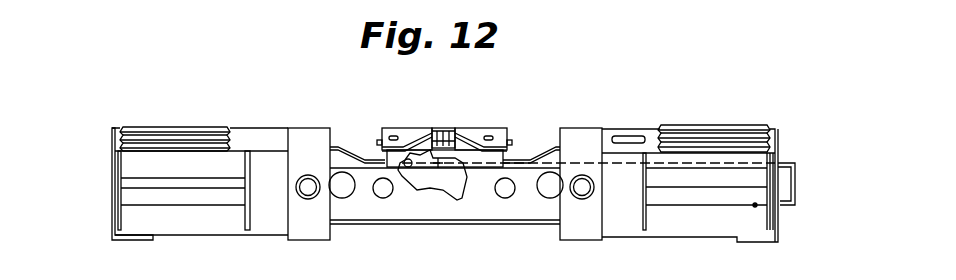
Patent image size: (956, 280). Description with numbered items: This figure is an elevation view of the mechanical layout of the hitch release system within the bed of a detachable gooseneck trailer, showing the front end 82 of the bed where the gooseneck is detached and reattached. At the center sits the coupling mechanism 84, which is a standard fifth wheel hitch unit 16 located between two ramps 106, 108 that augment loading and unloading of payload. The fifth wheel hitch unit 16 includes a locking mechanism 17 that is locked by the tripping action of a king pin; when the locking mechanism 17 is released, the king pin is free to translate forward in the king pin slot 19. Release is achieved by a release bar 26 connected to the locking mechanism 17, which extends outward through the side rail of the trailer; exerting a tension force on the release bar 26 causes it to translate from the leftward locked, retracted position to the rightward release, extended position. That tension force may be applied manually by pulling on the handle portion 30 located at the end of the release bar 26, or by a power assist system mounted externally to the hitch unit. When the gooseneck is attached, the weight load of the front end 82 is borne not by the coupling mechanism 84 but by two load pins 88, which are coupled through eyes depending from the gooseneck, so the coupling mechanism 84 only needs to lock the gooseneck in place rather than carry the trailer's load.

The ramp 108 is at (172, 128).
The coupling mechanism 84 is at (424, 116).
The fifth wheel hitch unit 16 is at (426, 127).
The locking mechanism 17 is at (448, 128).
The king pin slot 19 is at (490, 122).
The release bar 26 is at (657, 163).
The ramp 106 is at (715, 125).
The handle portion 30 is at (787, 163).
The load pin 88 is at (308, 190).
The front end 82 is at (700, 228).